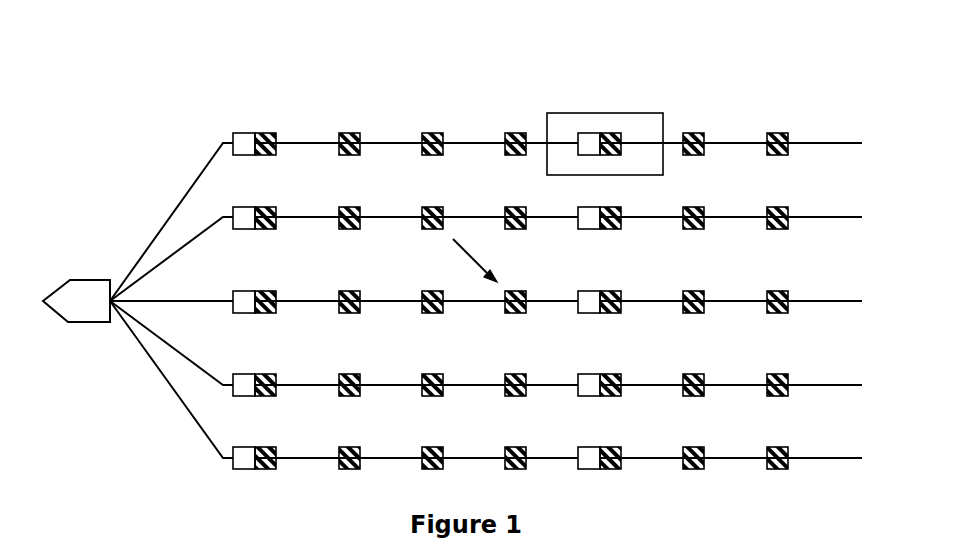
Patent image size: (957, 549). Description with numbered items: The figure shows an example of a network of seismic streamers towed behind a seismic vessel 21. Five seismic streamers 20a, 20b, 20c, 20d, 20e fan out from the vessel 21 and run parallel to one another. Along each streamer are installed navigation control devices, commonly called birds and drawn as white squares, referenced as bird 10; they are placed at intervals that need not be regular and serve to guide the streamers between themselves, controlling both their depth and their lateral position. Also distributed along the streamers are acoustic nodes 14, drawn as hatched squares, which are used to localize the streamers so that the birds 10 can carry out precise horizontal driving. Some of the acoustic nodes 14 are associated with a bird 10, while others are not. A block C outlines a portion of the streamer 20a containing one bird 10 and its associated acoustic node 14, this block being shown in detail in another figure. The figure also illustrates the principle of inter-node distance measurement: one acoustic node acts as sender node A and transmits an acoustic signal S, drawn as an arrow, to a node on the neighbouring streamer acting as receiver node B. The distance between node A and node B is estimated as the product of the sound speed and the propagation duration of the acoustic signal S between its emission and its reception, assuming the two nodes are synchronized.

The bird 10 is at (247, 133).
The acoustic node 14 is at (268, 133).
The seismic streamer 20a is at (215, 154).
The seismic streamer 20b is at (192, 238).
The seismic streamer 20c is at (170, 300).
The seismic streamer 20d is at (158, 340).
The seismic streamer 20e is at (182, 412).
The seismic vessel 21 is at (92, 338).
The sender node A is at (431, 195).
The receiver node B is at (516, 280).
The block C is at (663, 113).
The acoustic signal S is at (475, 260).